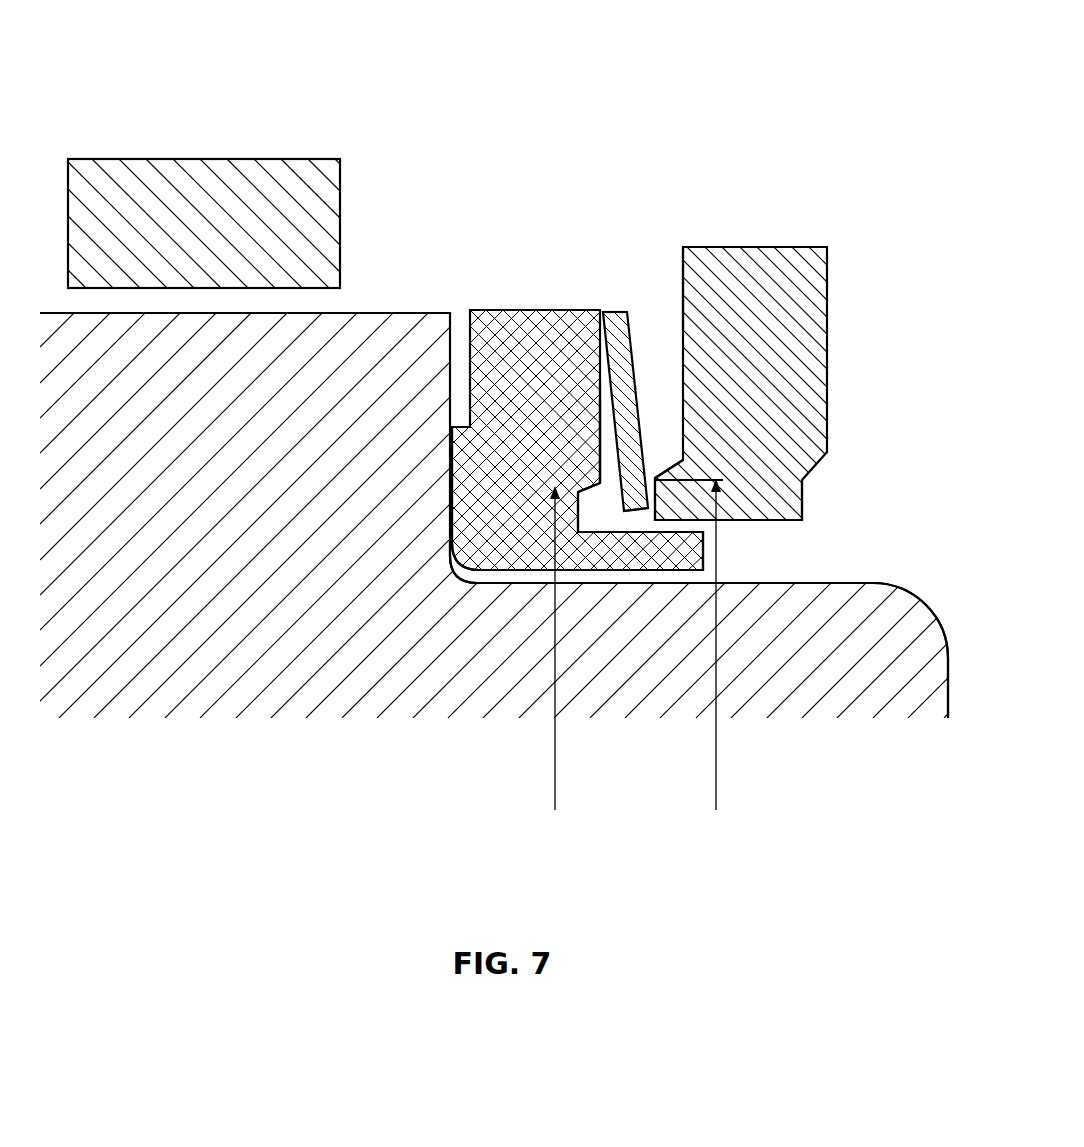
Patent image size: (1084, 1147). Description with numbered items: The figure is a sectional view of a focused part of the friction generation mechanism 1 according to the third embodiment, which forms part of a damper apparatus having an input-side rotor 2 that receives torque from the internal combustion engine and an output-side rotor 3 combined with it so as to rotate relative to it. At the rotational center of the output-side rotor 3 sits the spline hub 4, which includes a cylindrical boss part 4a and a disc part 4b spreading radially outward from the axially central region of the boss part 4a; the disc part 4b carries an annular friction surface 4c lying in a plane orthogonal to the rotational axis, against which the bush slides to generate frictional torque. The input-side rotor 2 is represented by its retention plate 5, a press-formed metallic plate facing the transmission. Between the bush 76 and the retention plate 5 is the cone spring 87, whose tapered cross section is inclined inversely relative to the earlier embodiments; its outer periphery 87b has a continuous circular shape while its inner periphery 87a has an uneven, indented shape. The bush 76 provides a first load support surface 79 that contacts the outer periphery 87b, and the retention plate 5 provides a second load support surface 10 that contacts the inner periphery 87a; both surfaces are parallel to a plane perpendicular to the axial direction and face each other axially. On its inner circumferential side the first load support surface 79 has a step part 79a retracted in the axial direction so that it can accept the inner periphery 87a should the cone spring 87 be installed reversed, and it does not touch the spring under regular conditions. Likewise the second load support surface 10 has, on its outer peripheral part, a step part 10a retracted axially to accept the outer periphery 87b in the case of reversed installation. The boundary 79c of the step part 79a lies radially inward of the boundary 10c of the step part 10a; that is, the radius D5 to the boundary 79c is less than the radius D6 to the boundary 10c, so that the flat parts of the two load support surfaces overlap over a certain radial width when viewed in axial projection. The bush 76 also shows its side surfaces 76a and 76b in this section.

The friction generation mechanism 1 is at (590, 150).
The input-side rotor 2 is at (824, 205).
The output-side rotor 3 is at (140, 753).
The spline hub 4 is at (278, 655).
The boss part 4a is at (826, 683).
The disc part 4b is at (338, 340).
The annular friction surface 4c is at (490, 578).
The retention plate 5 is at (770, 290).
The second load support surface 10 is at (652, 513).
The step part 10a is at (684, 296).
The boundary 10c is at (655, 478).
The bush 76 is at (517, 309).
The outer side surface 76a is at (450, 503).
The inner side surface 76b is at (700, 540).
The first load support surface 79 is at (612, 418).
The step part 79a is at (600, 492).
The boundary 79c is at (603, 490).
The cone spring 87 is at (637, 316).
The inner periphery 87a is at (627, 512).
The outer periphery 87b is at (613, 314).
The radius to boundary 79c D5 is at (540, 649).
The radius to boundary 10c D6 is at (700, 646).